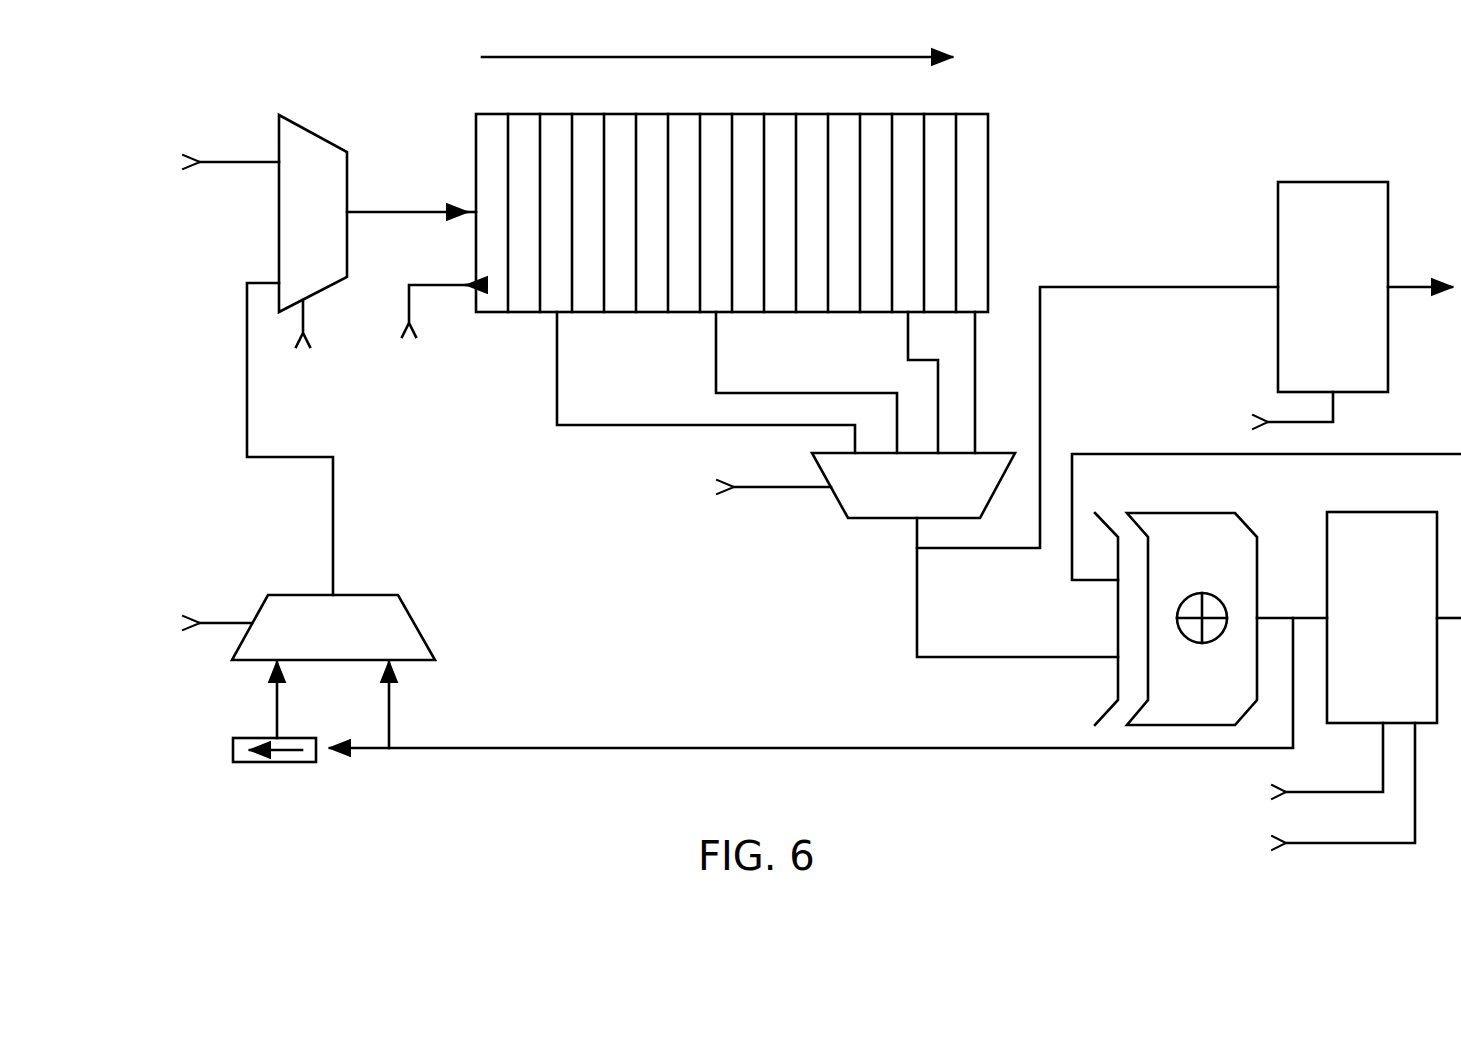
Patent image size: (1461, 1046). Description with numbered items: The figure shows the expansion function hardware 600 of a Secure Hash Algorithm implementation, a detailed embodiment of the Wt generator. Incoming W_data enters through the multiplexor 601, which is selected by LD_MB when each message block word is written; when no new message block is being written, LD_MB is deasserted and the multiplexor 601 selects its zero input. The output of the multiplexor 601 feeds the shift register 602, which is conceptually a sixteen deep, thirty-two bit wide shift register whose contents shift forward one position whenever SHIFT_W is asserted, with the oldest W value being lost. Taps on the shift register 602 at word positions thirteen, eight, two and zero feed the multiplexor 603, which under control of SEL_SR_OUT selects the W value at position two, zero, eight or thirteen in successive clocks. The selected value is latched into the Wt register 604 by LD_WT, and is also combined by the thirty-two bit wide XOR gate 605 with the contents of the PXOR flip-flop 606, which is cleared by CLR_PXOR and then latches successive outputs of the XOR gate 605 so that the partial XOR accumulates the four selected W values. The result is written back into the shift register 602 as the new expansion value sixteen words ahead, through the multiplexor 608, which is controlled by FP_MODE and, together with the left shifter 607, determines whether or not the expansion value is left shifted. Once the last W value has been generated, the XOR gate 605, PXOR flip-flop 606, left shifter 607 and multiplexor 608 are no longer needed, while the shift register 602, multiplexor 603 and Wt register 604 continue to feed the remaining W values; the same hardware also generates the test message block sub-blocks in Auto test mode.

The expansion function hardware 600 is at (695, 668).
The multiplexor 601 is at (313, 132).
The shift register 602 is at (988, 165).
The multiplexor 603 is at (842, 508).
The Wt register 604 is at (1278, 228).
The XOR gate 605 is at (1160, 512).
The PXOR flip-flop 606 is at (1327, 543).
The left shifter 607 is at (290, 762).
The multiplexor 608 is at (415, 623).